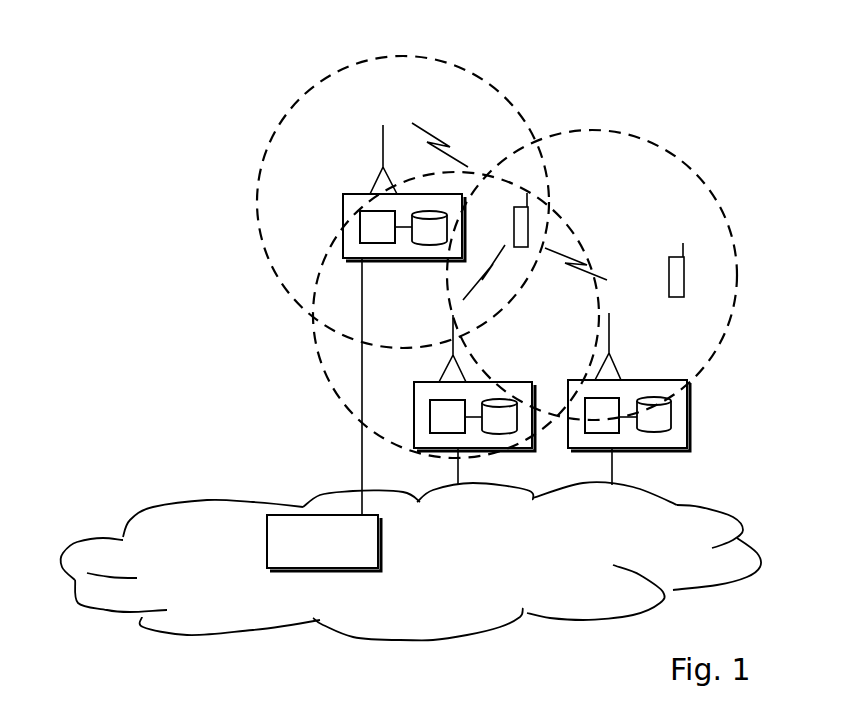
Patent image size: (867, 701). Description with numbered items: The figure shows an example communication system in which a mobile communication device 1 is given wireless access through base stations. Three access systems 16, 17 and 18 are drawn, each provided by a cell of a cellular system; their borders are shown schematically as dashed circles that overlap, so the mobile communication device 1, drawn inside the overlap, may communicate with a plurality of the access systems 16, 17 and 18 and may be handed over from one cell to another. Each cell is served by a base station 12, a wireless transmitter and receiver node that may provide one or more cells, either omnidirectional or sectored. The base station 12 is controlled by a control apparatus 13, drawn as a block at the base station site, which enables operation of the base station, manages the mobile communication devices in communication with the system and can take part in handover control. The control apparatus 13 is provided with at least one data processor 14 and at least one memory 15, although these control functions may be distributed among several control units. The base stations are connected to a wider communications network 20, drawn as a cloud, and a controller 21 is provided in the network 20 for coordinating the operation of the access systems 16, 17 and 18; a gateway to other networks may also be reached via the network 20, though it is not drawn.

The mobile communication device 1 is at (519, 230).
The base station 12 is at (373, 138).
The control apparatus 13 is at (345, 230).
The data processor 14 is at (375, 242).
The memory 15 is at (420, 235).
The access system 16 is at (422, 114).
The access system 17 is at (408, 387).
The access system 18 is at (630, 217).
The communications network 20 is at (130, 518).
The controller 21 is at (308, 523).